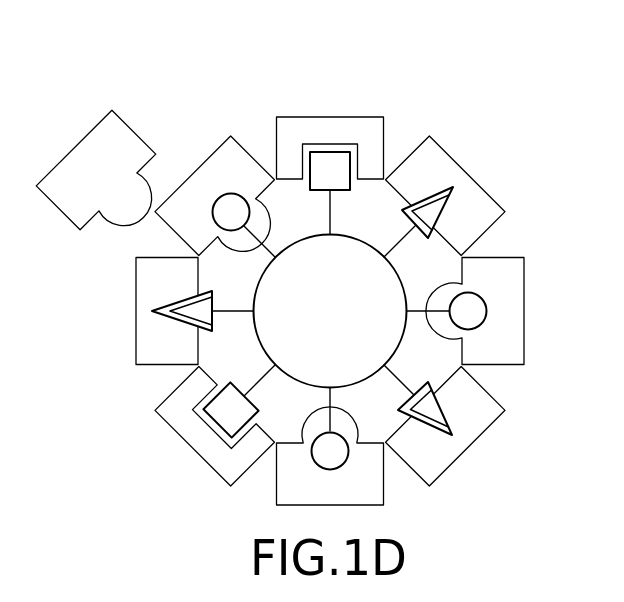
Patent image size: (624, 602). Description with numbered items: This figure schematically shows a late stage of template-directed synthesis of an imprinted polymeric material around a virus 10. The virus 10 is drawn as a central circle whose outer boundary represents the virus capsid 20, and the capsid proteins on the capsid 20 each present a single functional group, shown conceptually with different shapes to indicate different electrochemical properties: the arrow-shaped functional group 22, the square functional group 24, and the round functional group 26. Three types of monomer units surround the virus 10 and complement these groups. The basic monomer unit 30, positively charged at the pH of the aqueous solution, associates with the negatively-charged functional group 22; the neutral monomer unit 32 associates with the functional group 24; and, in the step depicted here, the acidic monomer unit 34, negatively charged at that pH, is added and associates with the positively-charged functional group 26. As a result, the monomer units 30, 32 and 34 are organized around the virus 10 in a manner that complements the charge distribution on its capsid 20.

The virus 10 is at (315, 325).
The virus capsid 20 is at (393, 267).
The functional group 22 is at (437, 220).
The functional group 24 is at (330, 152).
The functional group 26 is at (487, 312).
The basic monomer unit 30 is at (457, 157).
The neutral monomer unit 32 is at (298, 118).
The acidic monomer unit 34 is at (523, 287).